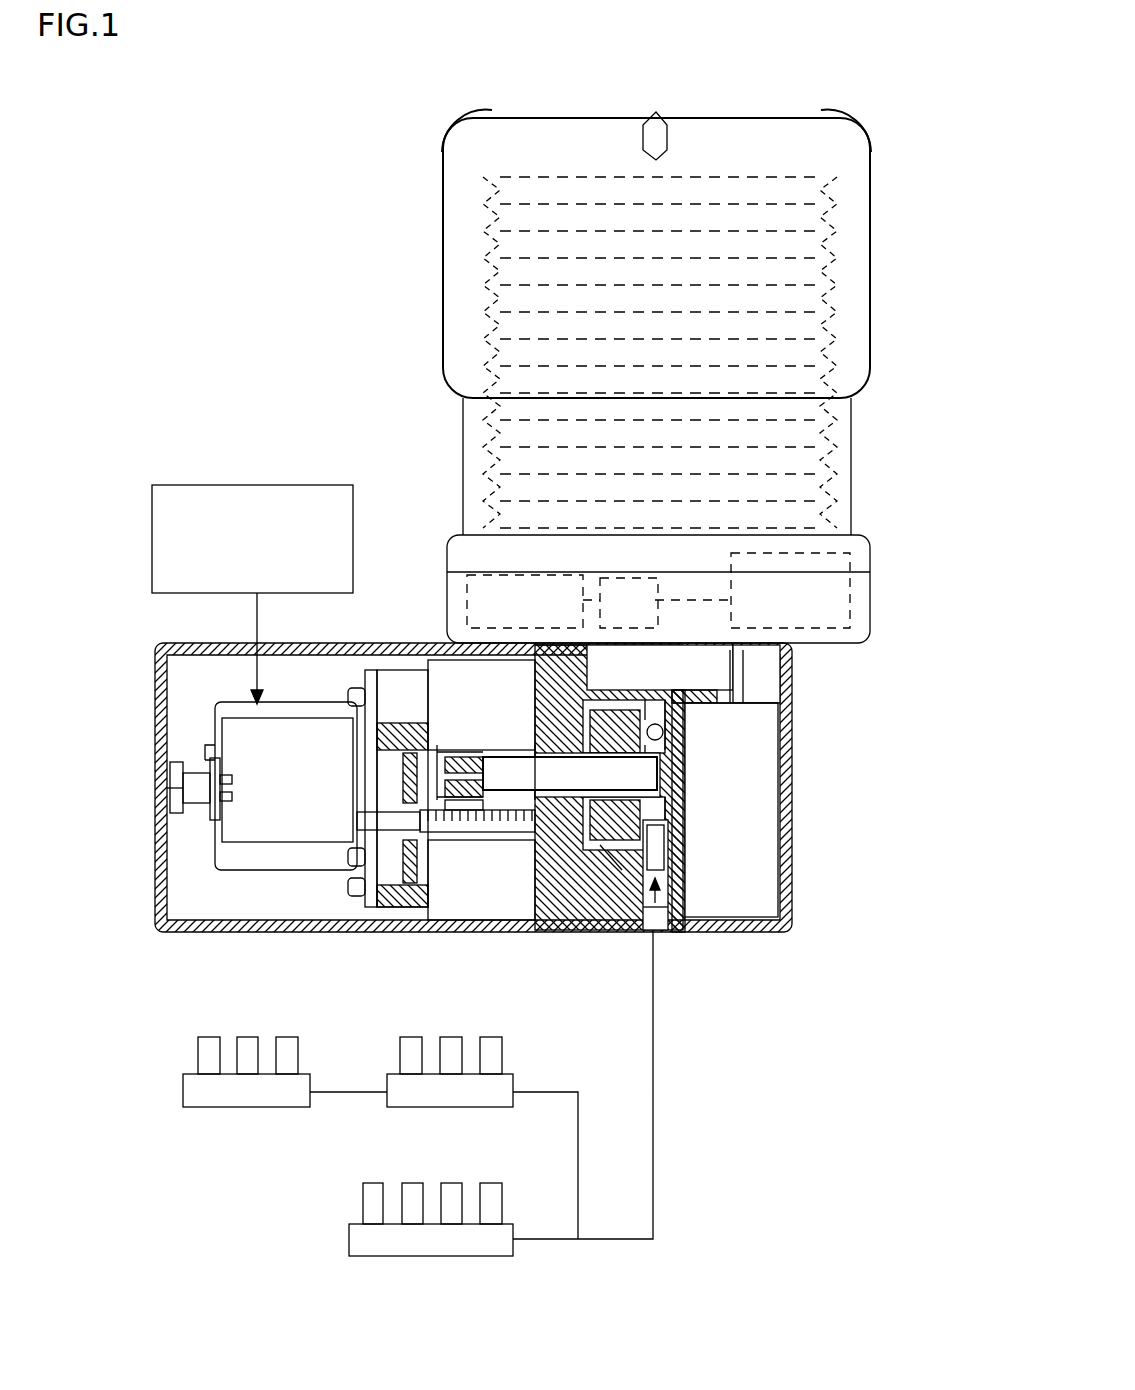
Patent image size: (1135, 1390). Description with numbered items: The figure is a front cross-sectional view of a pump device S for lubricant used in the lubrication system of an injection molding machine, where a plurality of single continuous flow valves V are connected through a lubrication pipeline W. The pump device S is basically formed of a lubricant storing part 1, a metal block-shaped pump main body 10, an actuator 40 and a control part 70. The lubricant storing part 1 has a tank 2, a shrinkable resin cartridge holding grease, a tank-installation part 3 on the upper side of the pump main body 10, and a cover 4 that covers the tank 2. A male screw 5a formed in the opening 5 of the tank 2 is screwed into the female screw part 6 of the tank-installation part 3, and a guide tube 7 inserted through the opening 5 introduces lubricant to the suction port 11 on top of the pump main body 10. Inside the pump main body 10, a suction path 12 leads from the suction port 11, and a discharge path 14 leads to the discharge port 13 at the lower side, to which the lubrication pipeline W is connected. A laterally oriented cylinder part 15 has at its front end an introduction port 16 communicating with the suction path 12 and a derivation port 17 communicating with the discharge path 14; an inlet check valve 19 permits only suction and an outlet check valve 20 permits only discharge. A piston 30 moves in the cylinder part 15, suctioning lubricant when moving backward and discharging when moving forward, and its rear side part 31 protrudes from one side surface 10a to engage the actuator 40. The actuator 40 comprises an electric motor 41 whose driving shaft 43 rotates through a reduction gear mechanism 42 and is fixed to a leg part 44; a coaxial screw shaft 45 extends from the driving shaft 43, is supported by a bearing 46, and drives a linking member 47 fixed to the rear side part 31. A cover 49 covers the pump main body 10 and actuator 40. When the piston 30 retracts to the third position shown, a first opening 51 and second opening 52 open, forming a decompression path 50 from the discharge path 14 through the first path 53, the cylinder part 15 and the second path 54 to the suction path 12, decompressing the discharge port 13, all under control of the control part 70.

The pump device for lubricant S is at (258, 286).
The lubricant storing part 1 is at (857, 238).
The tank 2 is at (792, 313).
The tank-installation part 3 is at (740, 632).
The cover 4 is at (857, 362).
The opening 5 is at (690, 615).
The male screw 5a is at (710, 617).
The female screw part 6 is at (607, 600).
The guide tube 7 is at (655, 580).
The pump main body 10 is at (735, 930).
The one side surface 10a is at (528, 890).
The suction port 11 is at (740, 668).
The suction path 12 is at (760, 700).
The discharge port 13 is at (668, 935).
The discharge path 14 is at (700, 875).
The cylinder part 15 is at (572, 895).
The introduction port 16 is at (680, 745).
The derivation port 17 is at (700, 800).
The inlet check valve 19 is at (663, 732).
The outlet check valve 20 is at (690, 840).
The piston 30 is at (520, 748).
The rear side part 31 is at (462, 770).
The actuator 40 is at (252, 858).
The electric motor 41 is at (258, 807).
The reduction gear mechanism 42 is at (375, 865).
The driving shaft 43 is at (372, 830).
The leg part 44 is at (445, 845).
The screw shaft 45 is at (470, 850).
The bearing 46 is at (500, 840).
The linking member 47 is at (437, 747).
The cover 49 is at (180, 768).
The decompression path 50 is at (655, 935).
The first opening 51 is at (566, 890).
The second opening 52 is at (598, 702).
The first path 53 is at (622, 870).
The second path 54 is at (543, 657).
The control part 70 is at (251, 495).
The single continuous flow valve V is at (200, 1050).
The lubrication pipeline W is at (655, 1115).